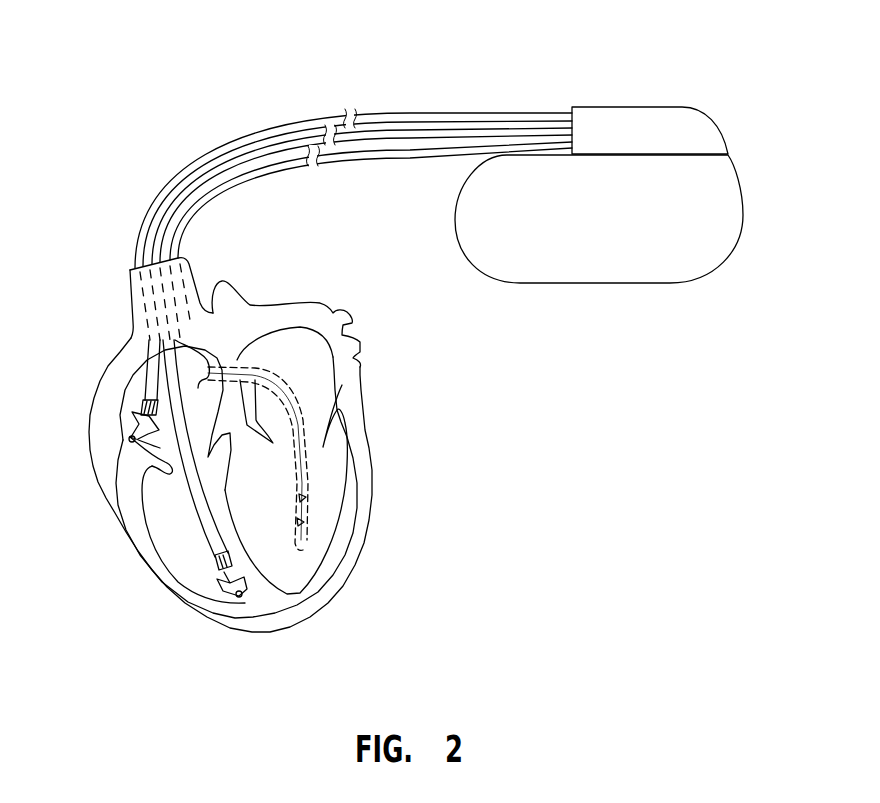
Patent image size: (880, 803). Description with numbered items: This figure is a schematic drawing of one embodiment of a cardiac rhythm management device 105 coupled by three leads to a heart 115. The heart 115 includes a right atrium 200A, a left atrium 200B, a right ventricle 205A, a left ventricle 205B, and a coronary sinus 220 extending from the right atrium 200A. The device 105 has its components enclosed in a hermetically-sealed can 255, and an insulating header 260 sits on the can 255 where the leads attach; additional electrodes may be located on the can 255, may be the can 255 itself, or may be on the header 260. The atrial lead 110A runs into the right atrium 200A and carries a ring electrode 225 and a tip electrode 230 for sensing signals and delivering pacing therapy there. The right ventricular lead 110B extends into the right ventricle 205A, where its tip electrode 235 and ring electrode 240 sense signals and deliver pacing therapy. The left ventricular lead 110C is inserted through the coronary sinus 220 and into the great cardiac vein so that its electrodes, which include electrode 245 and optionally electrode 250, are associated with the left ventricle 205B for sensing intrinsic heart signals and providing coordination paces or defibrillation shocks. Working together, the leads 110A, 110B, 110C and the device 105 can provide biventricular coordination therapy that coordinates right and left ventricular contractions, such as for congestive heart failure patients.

The device 105 is at (632, 150).
The atrial lead 110A is at (233, 131).
The right ventricular lead 110B is at (215, 163).
The left ventricular lead 110C is at (234, 190).
The heart 115 is at (371, 436).
The right atrium 200A is at (135, 460).
The left atrium 200B is at (297, 360).
The right ventricle 205A is at (172, 508).
The left ventricle 205B is at (312, 563).
The coronary sinus 220 is at (298, 446).
The ring electrode 225 is at (94, 401).
The tip electrode 230 is at (131, 436).
The tip electrode 235 is at (183, 494).
The ring electrode 240 is at (236, 592).
The electrode 245 is at (304, 522).
The electrode 250 is at (306, 497).
The hermetically-sealed can 255 is at (745, 193).
The insulating header 260 is at (716, 131).